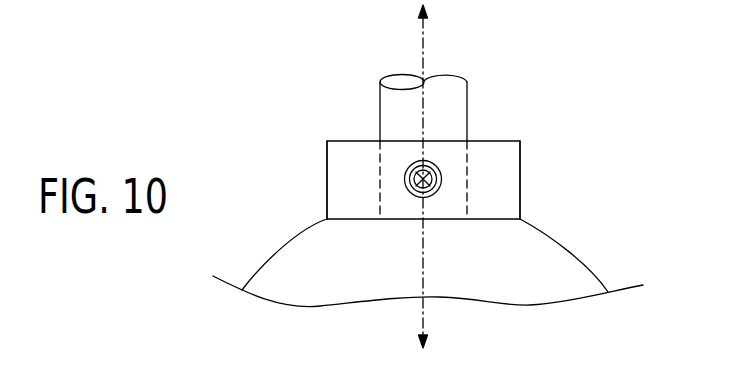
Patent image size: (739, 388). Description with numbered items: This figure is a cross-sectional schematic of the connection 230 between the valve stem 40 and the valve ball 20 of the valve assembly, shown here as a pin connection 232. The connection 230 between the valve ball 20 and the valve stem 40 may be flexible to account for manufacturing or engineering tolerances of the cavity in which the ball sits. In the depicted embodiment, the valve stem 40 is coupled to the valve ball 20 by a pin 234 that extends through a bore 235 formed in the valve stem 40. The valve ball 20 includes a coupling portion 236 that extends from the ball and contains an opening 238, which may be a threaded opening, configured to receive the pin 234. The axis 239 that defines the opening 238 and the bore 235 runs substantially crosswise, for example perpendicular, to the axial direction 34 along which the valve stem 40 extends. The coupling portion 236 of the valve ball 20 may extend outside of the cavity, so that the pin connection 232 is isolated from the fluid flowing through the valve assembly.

The valve ball 20 is at (532, 260).
The axial direction 34 is at (423, 42).
The valve stem 40 is at (445, 95).
The connection 230 is at (515, 93).
The pin connection 232 is at (318, 146).
The pin 234 is at (405, 178).
The bore 235 is at (448, 163).
The coupling portion 236 is at (497, 188).
The opening 238 is at (367, 131).
The axis 239 is at (432, 186).